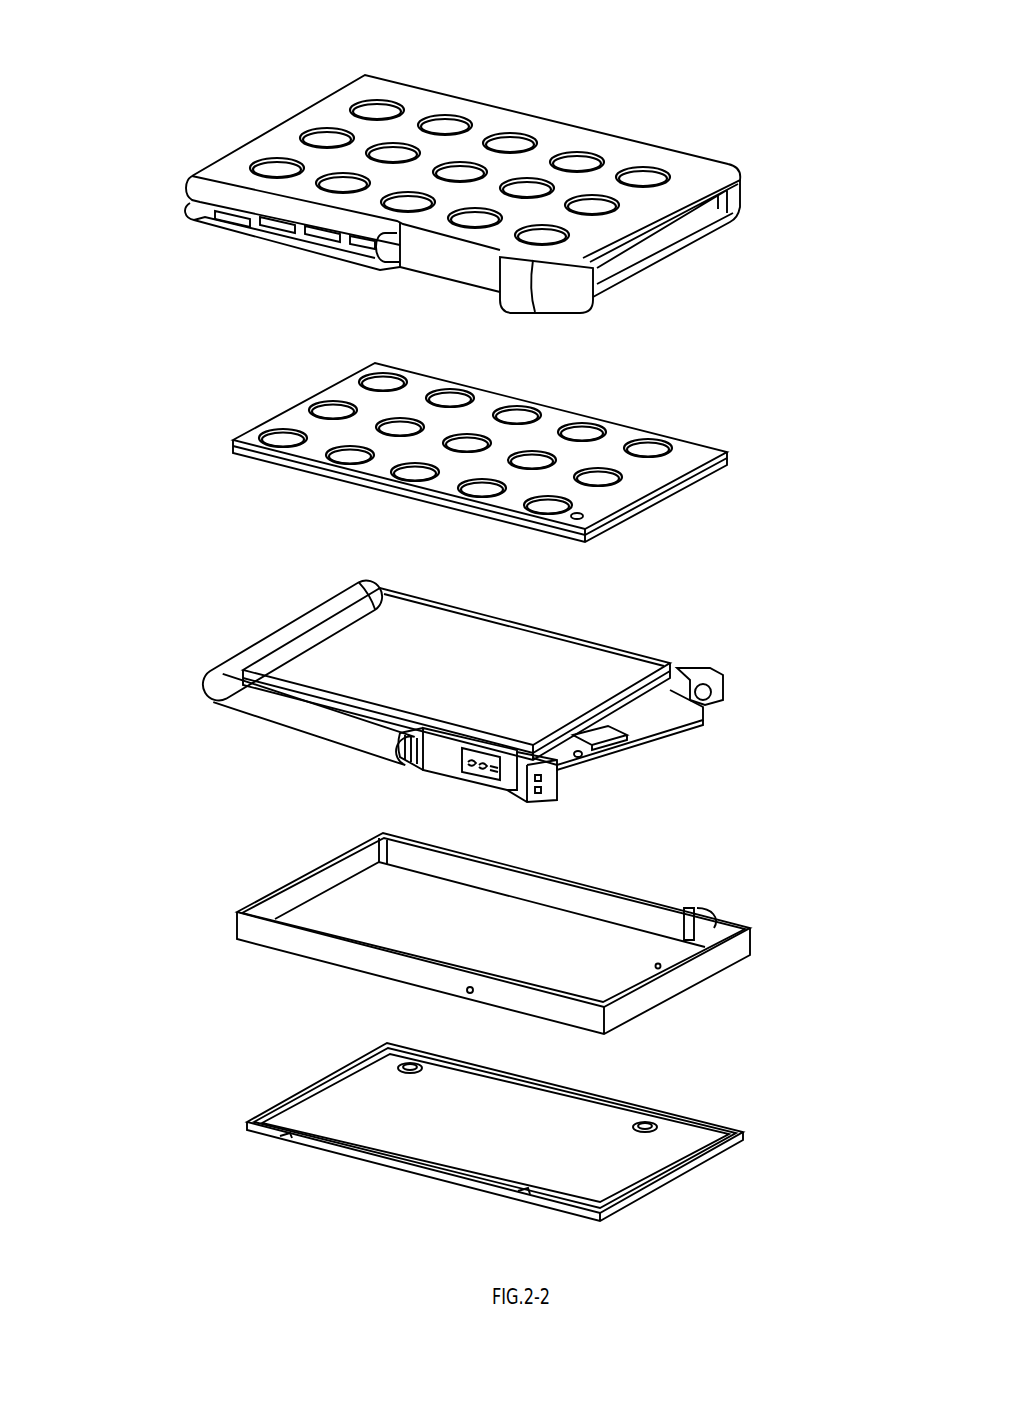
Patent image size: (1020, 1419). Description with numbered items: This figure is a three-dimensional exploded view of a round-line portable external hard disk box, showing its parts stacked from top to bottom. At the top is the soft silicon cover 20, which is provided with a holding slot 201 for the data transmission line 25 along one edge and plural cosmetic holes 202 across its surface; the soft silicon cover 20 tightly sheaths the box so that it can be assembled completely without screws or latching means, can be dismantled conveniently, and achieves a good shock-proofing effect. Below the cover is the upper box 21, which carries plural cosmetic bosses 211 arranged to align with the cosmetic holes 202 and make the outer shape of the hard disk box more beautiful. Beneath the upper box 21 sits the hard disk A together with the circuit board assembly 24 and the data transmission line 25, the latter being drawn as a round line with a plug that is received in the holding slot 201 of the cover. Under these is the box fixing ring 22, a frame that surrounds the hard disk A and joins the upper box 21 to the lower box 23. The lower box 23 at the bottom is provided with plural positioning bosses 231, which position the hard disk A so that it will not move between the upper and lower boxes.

The soft silicon cover 20 is at (423, 162).
The holding slot 201 is at (190, 203).
The cosmetic holes 202 is at (650, 180).
The upper box 21 is at (480, 436).
The cosmetic bosses 211 is at (327, 408).
The hard disk A is at (597, 667).
The data transmission line 25 is at (283, 713).
The circuit board assembly 24 is at (637, 730).
The box fixing ring 22 is at (608, 885).
The lower box 23 is at (495, 1121).
The positioning bosses 231 is at (410, 1060).